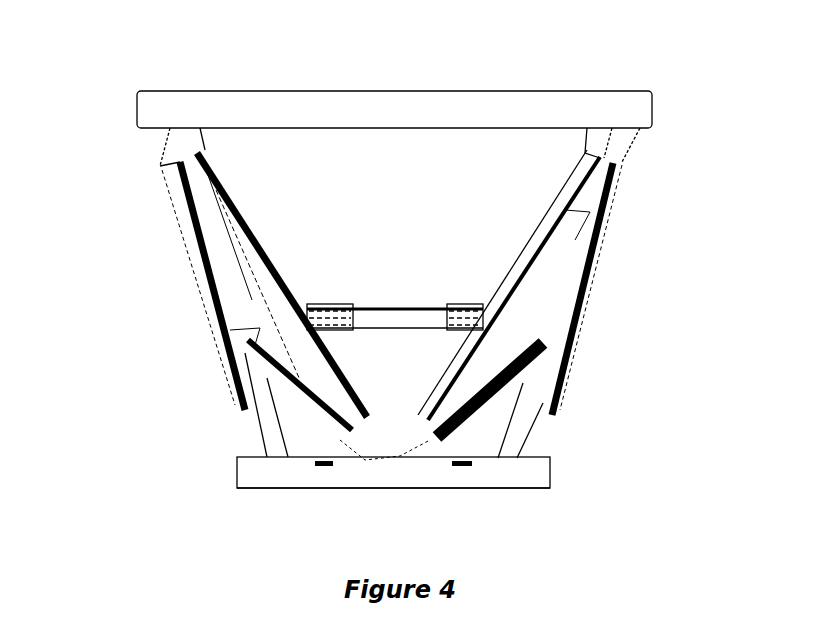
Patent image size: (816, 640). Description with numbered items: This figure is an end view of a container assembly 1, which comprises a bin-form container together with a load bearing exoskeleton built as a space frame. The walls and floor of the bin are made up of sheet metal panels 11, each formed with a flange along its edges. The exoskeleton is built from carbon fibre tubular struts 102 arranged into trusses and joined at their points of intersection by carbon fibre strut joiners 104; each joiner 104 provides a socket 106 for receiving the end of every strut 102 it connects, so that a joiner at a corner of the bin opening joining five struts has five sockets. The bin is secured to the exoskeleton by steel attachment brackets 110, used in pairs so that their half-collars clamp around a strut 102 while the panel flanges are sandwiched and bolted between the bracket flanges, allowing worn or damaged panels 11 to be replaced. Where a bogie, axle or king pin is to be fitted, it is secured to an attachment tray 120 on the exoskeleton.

The container assembly 1 is at (488, 76).
The sheet metal panel 11 is at (365, 108).
The carbon fibre tubular strut 102 is at (200, 302).
The carbon fibre strut joiner 104 is at (152, 147).
The socket 106 is at (240, 437).
The steel attachment bracket 110 is at (328, 305).
The attachment tray 120 is at (335, 480).